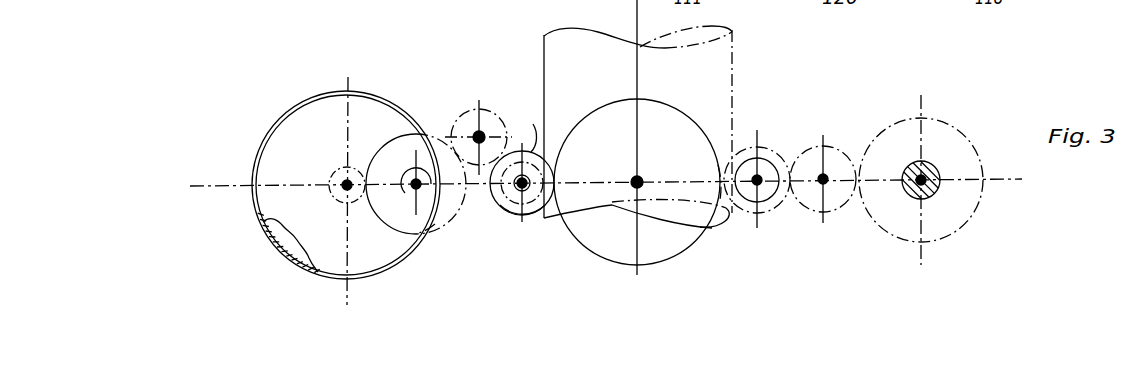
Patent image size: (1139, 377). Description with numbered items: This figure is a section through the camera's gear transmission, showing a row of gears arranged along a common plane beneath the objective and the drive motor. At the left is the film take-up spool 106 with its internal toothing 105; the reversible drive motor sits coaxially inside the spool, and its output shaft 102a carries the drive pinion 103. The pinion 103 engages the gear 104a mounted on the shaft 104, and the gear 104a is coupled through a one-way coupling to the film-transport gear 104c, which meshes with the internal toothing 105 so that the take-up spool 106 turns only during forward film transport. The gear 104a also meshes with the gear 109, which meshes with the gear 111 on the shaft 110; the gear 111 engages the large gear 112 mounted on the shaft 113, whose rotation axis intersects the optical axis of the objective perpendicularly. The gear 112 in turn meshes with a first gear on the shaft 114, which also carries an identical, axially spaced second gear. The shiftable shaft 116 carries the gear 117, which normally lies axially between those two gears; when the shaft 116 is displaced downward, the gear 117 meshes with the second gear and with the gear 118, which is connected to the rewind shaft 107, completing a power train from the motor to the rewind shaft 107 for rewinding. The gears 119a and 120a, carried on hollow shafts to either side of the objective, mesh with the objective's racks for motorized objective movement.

The motor output shaft 102a is at (348, 180).
The motor drive pinion 103 is at (342, 201).
The shaft 104 is at (417, 168).
The gear 104a is at (435, 224).
The film-transport gear 104c is at (406, 208).
The internal toothing 105 is at (275, 128).
The film take-up spool 106 is at (299, 103).
The rewind shaft 107 is at (930, 190).
The gear 109 is at (488, 112).
The shaft 110 is at (518, 213).
The gear 111 is at (528, 126).
The gear 112 is at (662, 256).
The shaft 113 is at (637, 182).
The shaft 114 is at (757, 158).
The shiftable shaft 116 is at (823, 180).
The gear 117 is at (820, 212).
The gear 118 is at (983, 160).
The gear 119a is at (531, 210).
The gear 120a is at (742, 195).